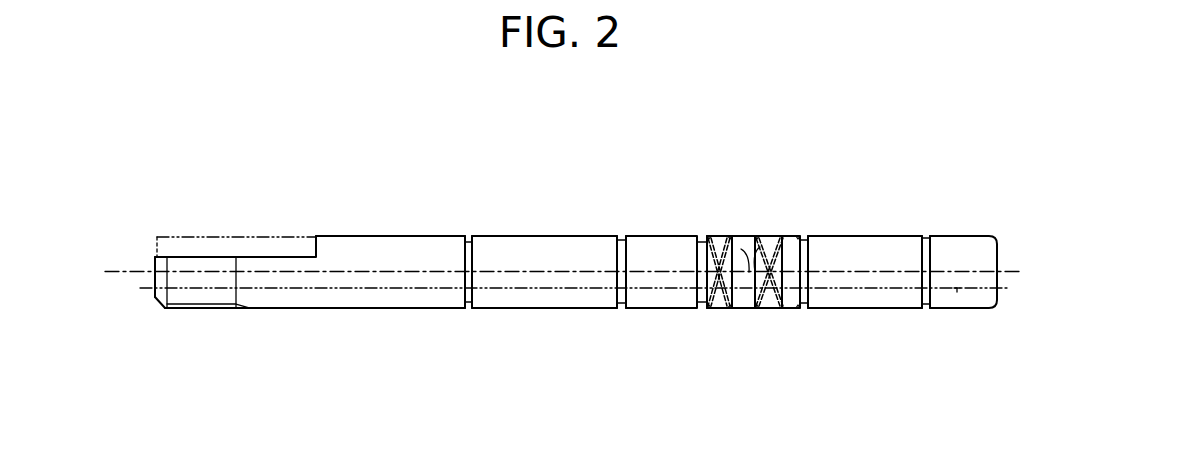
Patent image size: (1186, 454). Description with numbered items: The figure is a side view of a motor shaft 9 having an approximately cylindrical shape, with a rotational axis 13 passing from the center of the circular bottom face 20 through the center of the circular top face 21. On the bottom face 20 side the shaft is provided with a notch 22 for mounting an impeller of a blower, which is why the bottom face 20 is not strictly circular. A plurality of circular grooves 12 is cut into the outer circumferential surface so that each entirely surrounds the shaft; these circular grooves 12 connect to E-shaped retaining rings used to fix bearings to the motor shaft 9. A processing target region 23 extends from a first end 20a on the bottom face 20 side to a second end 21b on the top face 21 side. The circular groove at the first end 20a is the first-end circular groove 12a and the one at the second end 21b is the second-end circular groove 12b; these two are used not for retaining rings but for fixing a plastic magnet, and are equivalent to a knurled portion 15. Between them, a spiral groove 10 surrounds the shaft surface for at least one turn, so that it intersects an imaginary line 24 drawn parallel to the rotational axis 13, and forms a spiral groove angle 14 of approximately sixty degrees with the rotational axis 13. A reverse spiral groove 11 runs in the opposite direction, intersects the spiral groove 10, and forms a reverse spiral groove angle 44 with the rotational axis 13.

The motor shaft 9 is at (365, 140).
The spiral groove 10 is at (780, 236).
The reverse spiral groove 11 is at (765, 237).
The circular grooves 12 is at (464, 236).
The first-end circular groove 12a is at (702, 238).
The second-end circular groove 12b is at (808, 236).
The rotational axis 13 is at (133, 272).
The spiral groove angle 14 is at (741, 249).
The knurled portion 15 is at (698, 318).
The bottom face 20 is at (157, 292).
The first end 20a is at (706, 237).
The top face 21 is at (997, 245).
The second end 21b is at (807, 237).
The notch 22 is at (158, 203).
The processing target region 23 is at (772, 244).
The imaginary line 24 is at (958, 292).
The reverse spiral groove angle 44 is at (773, 245).